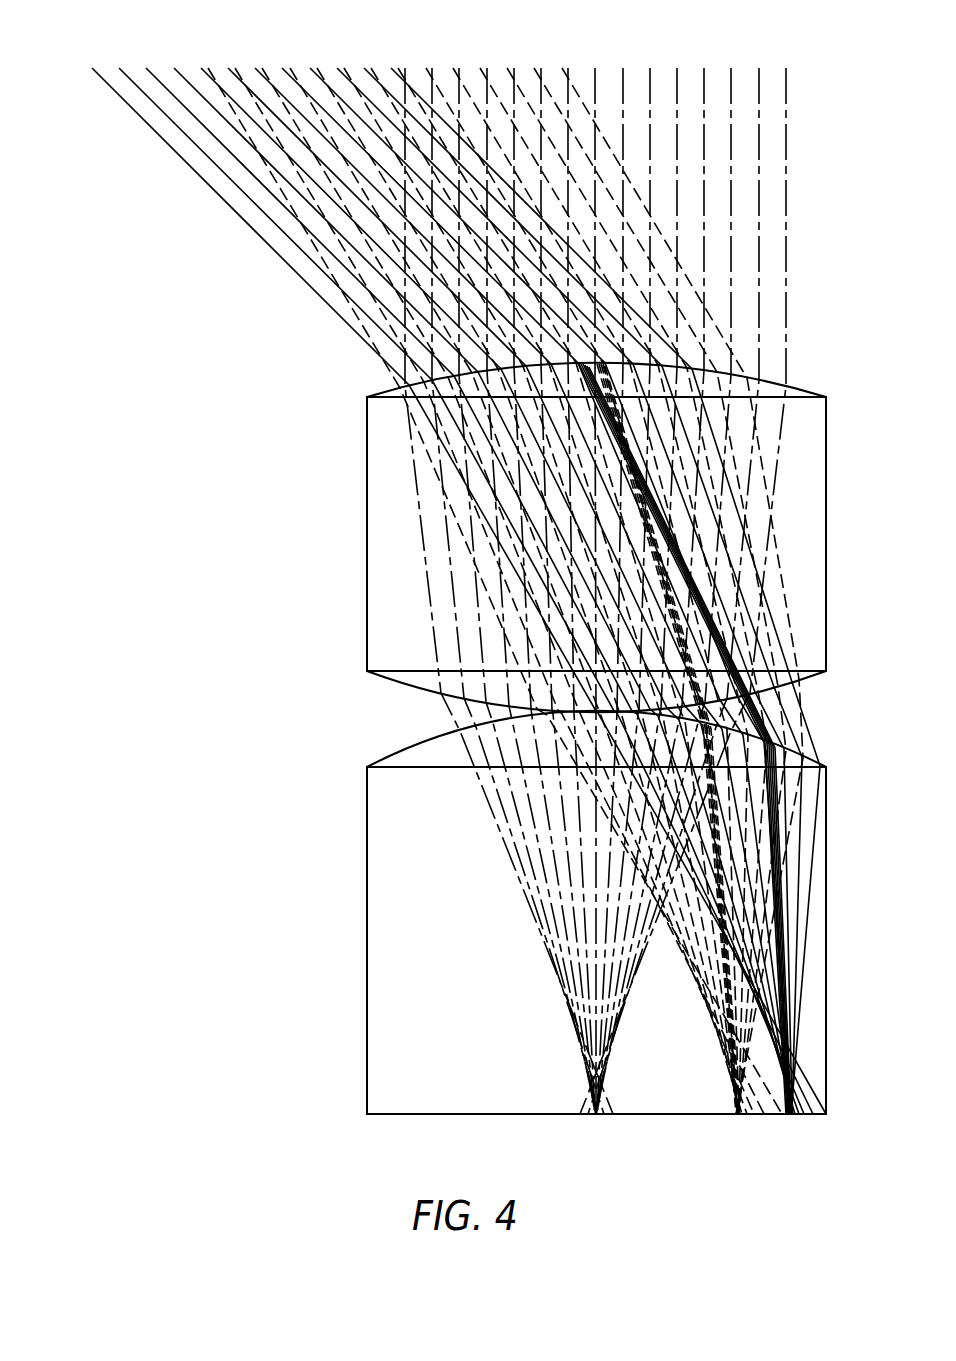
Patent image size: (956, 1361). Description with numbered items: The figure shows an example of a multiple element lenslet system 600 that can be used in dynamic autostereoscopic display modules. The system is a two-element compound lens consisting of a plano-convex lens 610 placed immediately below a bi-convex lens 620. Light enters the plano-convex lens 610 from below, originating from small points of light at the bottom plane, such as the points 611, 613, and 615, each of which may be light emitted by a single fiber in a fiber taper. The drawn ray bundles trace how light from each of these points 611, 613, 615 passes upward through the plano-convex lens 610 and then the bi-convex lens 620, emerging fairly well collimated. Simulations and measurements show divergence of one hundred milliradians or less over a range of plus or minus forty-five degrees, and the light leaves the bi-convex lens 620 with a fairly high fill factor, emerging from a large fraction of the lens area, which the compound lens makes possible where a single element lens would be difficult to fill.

The multiple element lenslet system 600 is at (252, 714).
The plano-convex lens 610 is at (367, 871).
The bi-convex lens 620 is at (367, 535).
The point of light 611 is at (596, 1116).
The point of light 613 is at (740, 1116).
The point of light 615 is at (788, 1116).